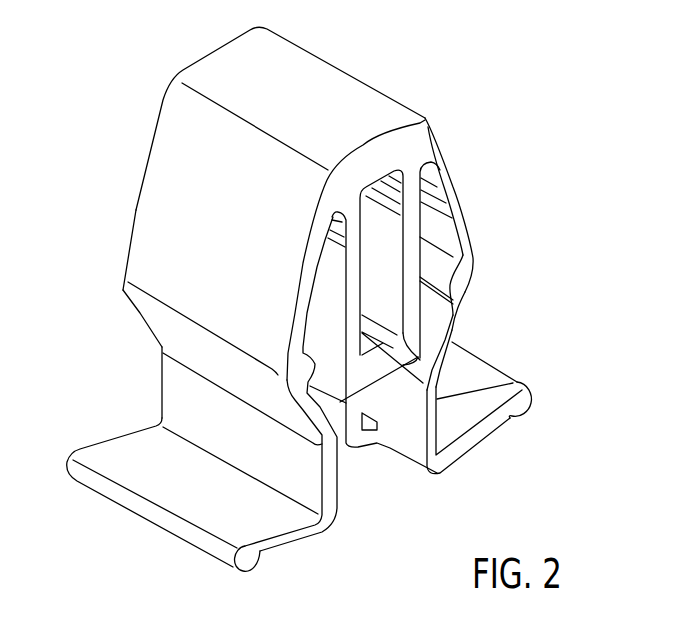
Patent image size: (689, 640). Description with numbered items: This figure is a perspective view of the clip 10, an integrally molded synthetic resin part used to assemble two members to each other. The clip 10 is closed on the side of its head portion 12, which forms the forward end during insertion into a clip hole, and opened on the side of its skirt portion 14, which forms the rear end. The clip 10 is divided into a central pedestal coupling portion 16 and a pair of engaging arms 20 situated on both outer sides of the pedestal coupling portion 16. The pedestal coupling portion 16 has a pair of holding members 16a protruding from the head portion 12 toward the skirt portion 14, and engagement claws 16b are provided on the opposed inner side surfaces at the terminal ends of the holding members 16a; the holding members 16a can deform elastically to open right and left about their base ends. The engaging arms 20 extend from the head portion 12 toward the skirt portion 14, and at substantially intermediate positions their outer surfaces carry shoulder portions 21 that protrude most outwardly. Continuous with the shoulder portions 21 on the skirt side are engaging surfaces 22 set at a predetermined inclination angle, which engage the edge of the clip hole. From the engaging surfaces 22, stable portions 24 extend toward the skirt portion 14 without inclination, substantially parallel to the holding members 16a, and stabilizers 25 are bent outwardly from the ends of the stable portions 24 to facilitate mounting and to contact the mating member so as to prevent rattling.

The clip 10 is at (457, 80).
The head portion 12 is at (312, 80).
The skirt portion 14 is at (367, 532).
The pedestal coupling portion 16 is at (436, 261).
The holding members 16a is at (330, 264).
The engagement claws 16b is at (393, 348).
The engaging arms 20 is at (163, 182).
The shoulder portions 21 is at (158, 315).
The engaging surfaces 22 is at (212, 363).
The stable portions 24 is at (240, 445).
The stabilizers 25 is at (281, 540).